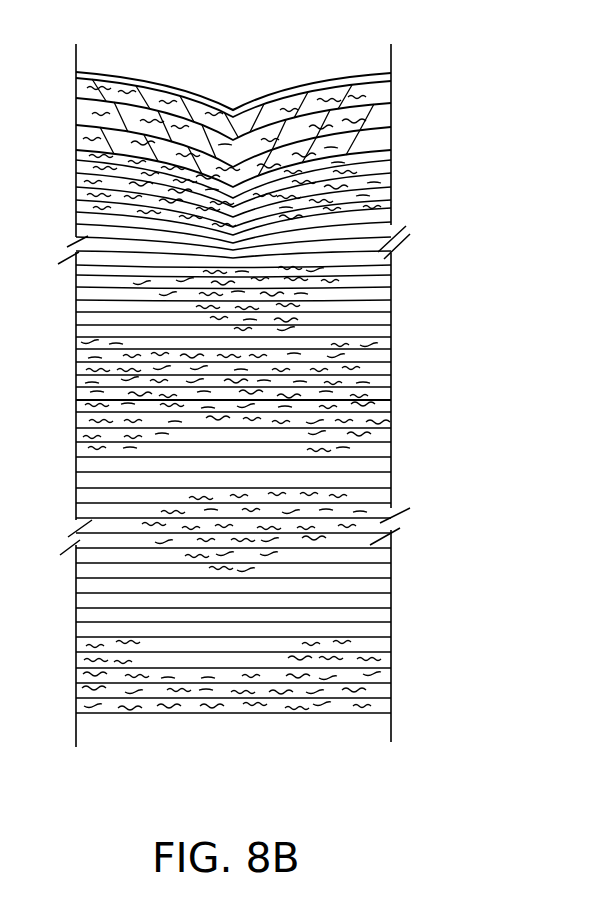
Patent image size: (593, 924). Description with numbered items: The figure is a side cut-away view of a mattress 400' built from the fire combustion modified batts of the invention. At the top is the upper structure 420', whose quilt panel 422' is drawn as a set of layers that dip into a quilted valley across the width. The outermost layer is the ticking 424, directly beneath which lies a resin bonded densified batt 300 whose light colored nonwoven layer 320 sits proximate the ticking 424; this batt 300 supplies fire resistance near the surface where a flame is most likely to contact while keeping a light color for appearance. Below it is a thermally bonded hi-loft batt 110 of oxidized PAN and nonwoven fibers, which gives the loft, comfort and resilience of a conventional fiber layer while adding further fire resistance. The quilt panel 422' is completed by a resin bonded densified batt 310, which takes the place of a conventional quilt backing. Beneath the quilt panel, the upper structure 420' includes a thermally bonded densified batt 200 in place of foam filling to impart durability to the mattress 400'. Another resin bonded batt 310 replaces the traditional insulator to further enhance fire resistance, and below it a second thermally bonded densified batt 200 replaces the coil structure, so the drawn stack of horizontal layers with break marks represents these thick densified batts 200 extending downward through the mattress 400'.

The mattress 400' is at (248, 368).
The ticking 424 is at (73, 74).
The quilt panel 422' is at (198, 140).
The light colored nonwoven layer 320 is at (393, 81).
The resin bonded densified batt 300 is at (413, 100).
The resin bonded densified batt 310 is at (393, 113).
The thermally bonded hi-loft batt 110 is at (393, 140).
The upper structure 420' is at (274, 389).
The thermally bonded densified batt 200 is at (390, 278).